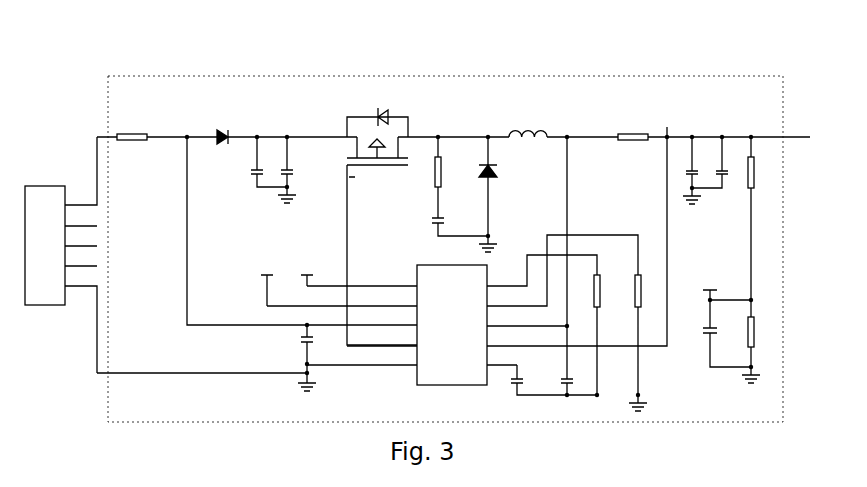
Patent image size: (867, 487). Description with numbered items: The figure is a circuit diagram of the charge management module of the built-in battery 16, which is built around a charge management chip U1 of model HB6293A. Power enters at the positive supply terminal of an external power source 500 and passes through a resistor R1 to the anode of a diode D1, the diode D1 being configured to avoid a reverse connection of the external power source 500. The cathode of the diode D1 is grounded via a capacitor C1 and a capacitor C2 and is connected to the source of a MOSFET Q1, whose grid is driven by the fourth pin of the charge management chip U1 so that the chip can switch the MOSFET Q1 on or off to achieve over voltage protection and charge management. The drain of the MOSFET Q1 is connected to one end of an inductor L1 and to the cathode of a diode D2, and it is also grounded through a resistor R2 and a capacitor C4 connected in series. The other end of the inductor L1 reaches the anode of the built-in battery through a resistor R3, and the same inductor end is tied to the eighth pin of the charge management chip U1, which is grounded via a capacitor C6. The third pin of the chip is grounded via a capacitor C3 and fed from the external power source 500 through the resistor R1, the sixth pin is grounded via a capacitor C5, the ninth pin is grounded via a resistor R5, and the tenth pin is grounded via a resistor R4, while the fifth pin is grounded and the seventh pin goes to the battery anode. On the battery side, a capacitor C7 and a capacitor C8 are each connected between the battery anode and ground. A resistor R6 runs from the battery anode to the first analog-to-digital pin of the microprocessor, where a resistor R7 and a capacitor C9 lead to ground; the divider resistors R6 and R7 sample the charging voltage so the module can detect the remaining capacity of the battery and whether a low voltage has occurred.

The charge management module of the built-in battery 16 is at (453, 225).
The external power source 500 is at (61, 255).
The resistor R1 is at (132, 129).
The diode D1 is at (219, 129).
The capacitor C1 is at (247, 158).
The capacitor C2 is at (297, 158).
The MOSFET Q1 is at (382, 220).
The resistor R2 is at (450, 177).
The capacitor C4 is at (426, 220).
The diode D2 is at (501, 186).
The inductor L1 is at (528, 127).
The resistor R3 is at (633, 128).
The capacitor C7 is at (698, 155).
The capacitor C8 is at (728, 155).
The resistor R6 is at (760, 162).
The resistor R7 is at (760, 332).
The capacitor C9 is at (721, 330).
The capacitor C6 is at (578, 266).
The capacitor C5 is at (527, 377).
The capacitor C3 is at (318, 337).
The resistor R4 is at (607, 291).
The resistor R5 is at (647, 291).
The charge management chip U1 is at (454, 317).